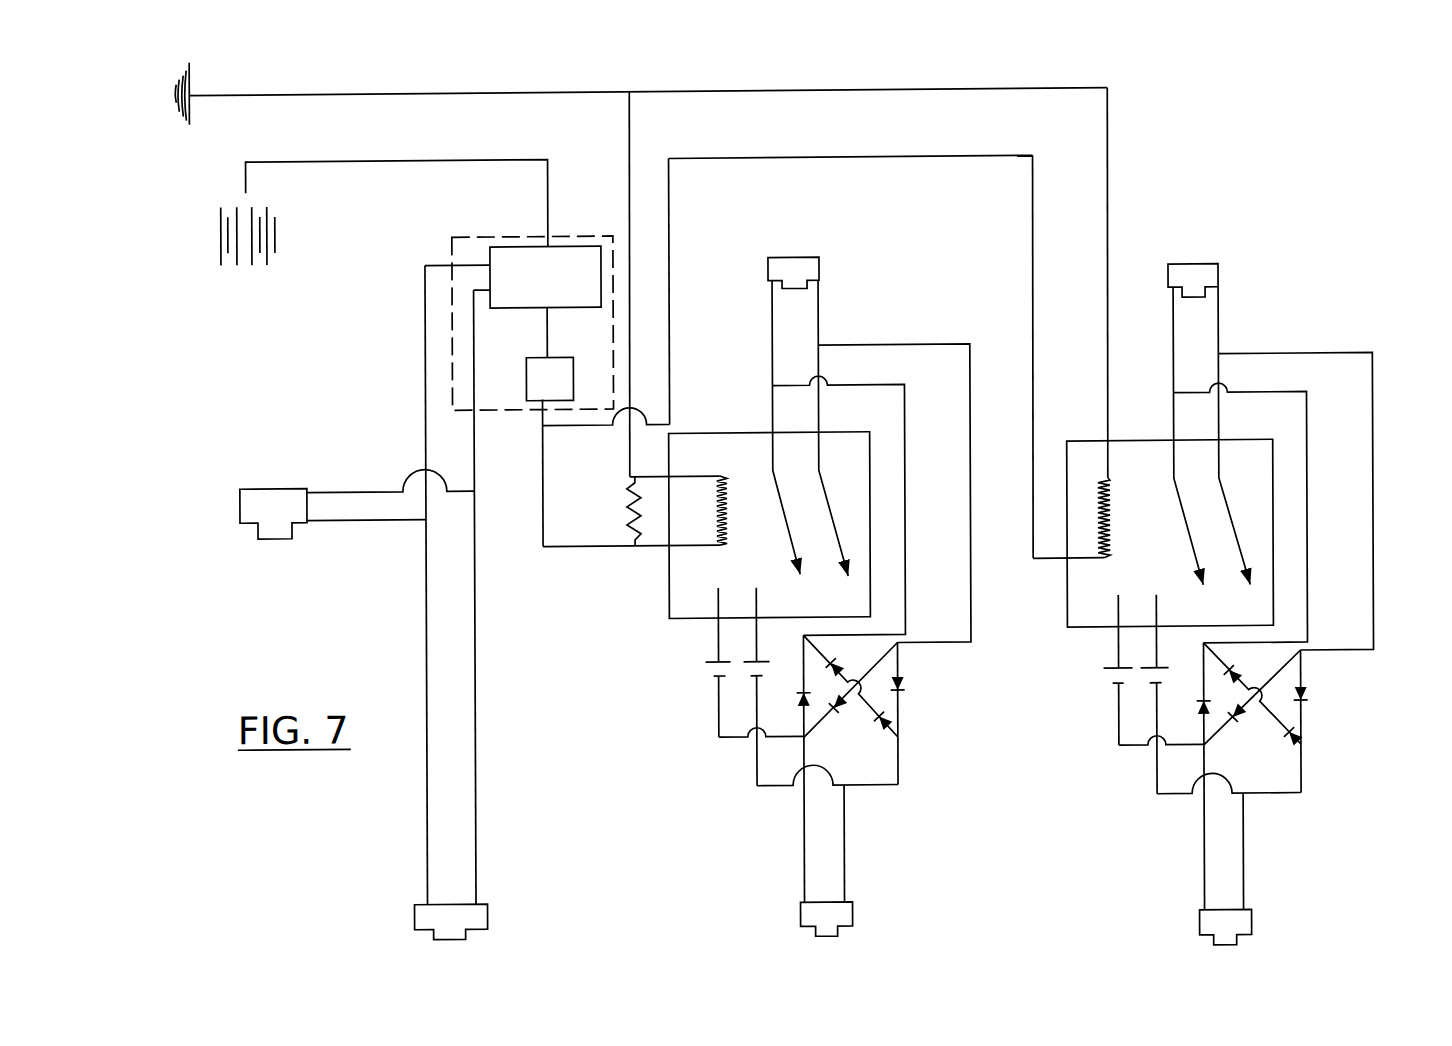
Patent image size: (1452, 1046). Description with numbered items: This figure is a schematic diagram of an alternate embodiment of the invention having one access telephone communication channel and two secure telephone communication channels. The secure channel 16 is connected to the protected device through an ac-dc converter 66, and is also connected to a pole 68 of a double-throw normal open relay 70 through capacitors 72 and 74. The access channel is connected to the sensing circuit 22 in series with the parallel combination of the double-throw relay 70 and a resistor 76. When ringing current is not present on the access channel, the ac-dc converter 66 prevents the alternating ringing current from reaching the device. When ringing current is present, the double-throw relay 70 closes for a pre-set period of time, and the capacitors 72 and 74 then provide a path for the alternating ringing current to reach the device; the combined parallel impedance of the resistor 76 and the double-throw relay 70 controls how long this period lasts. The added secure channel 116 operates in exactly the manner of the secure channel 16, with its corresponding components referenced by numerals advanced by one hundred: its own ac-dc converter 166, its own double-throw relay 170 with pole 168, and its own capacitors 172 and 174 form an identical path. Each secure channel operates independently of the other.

The sensing circuit 22 is at (447, 299).
The double-throw normal open relay 70 is at (713, 433).
The resistor 76 is at (625, 516).
The secure channel 16 is at (819, 312).
The pole 68 is at (738, 586).
The capacitor 72 is at (714, 677).
The capacitor 74 is at (753, 677).
The ac-dc converter 66 is at (889, 727).
The double-throw normal open relay 170 is at (1139, 444).
The secure channel 116 is at (1220, 342).
The pole 168 is at (1142, 604).
The capacitor 172 is at (1113, 689).
The capacitor 174 is at (1153, 691).
The ac-dc converter 166 is at (1297, 748).